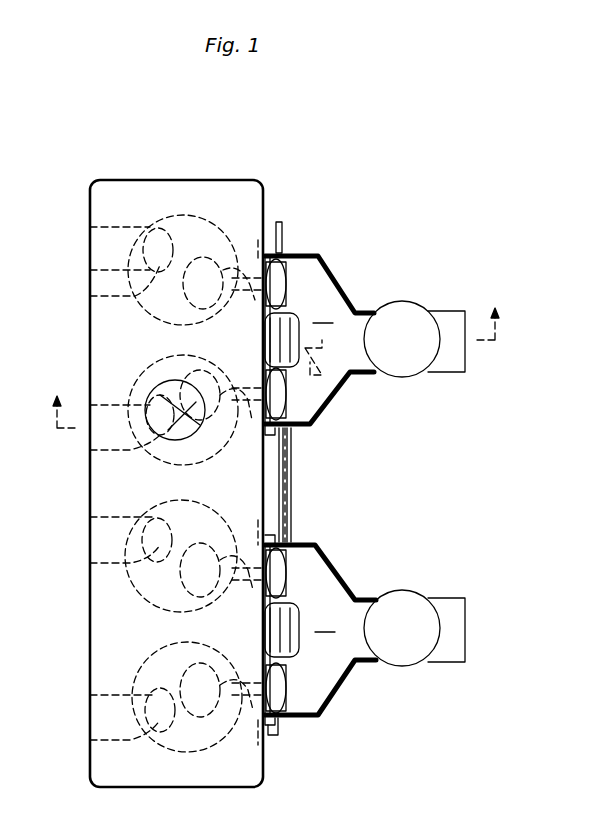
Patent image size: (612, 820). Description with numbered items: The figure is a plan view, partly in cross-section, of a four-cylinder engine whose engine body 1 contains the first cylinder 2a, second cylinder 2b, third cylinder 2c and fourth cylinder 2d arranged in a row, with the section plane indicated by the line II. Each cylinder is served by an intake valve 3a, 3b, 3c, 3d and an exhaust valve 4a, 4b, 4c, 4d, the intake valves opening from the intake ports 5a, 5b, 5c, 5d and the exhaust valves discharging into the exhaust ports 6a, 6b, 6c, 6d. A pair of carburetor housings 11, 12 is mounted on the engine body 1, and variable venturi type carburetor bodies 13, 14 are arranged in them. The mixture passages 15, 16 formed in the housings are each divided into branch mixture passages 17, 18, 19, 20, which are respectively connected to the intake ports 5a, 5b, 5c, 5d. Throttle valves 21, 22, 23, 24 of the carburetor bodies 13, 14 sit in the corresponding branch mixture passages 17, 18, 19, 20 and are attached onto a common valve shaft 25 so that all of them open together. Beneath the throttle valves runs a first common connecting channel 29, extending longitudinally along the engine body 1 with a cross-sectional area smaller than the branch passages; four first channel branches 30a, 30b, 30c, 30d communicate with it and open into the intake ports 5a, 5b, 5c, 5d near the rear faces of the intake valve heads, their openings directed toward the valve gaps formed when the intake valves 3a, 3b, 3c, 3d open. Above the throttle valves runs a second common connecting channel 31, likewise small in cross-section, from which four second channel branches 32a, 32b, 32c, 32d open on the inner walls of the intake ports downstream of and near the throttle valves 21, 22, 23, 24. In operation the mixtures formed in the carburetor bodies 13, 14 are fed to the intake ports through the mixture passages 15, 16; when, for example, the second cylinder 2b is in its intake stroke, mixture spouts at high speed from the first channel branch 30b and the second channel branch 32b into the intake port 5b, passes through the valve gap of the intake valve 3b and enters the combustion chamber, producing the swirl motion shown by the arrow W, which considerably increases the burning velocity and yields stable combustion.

The engine body 1 is at (268, 178).
The No. 1 cylinder 2a is at (118, 295).
The No. 2 cylinder 2b is at (152, 472).
The No. 3 cylinder 2c is at (140, 605).
The No. 4 cylinder 2d is at (170, 752).
The intake valve 3a is at (205, 262).
The intake valve 3b is at (190, 375).
The intake valve 3c is at (205, 545).
The intake valve 3d is at (200, 662).
The exhaust valve 4a is at (160, 235).
The exhaust valve 4b is at (150, 382).
The exhaust valve 4c is at (160, 522).
The exhaust valve 4d is at (158, 668).
The intake port 5a is at (247, 260).
The intake port 5b is at (246, 432).
The intake port 5c is at (248, 548).
The intake port 5d is at (248, 712).
The exhaust port 6a is at (92, 232).
The exhaust port 6b is at (100, 452).
The exhaust port 6c is at (100, 568).
The exhaust port 6d is at (96, 745).
The carburetor housing 11 is at (338, 270).
The carburetor housing 12 is at (340, 574).
The carburetor body 13 is at (400, 306).
The carburetor body 14 is at (400, 594).
The mixture passage 15 is at (324, 312).
The mixture passage 16 is at (326, 621).
The branch mixture passage 17 is at (285, 252).
The branch mixture passage 18 is at (303, 426).
The branch mixture passage 19 is at (292, 543).
The branch mixture passage 20 is at (290, 722).
The throttle valve 21 is at (290, 268).
The throttle valve 22 is at (330, 410).
The throttle valve 23 is at (286, 578).
The throttle valve 24 is at (286, 692).
The common valve shaft 25 is at (276, 740).
The first common connecting channel 29 is at (286, 470).
The second common connecting channel 31 is at (291, 498).
The first channel branch 30a is at (250, 300).
The first channel branch 30b is at (257, 335).
The first channel branch 30c is at (253, 600).
The first channel branch 30d is at (256, 680).
The second channel branch 32a is at (275, 250).
The second channel branch 32b is at (313, 344).
The second channel branch 32c is at (255, 520).
The second channel branch 32d is at (250, 735).
The swirl motion arrow W is at (200, 440).
The section line II is at (272, 353).